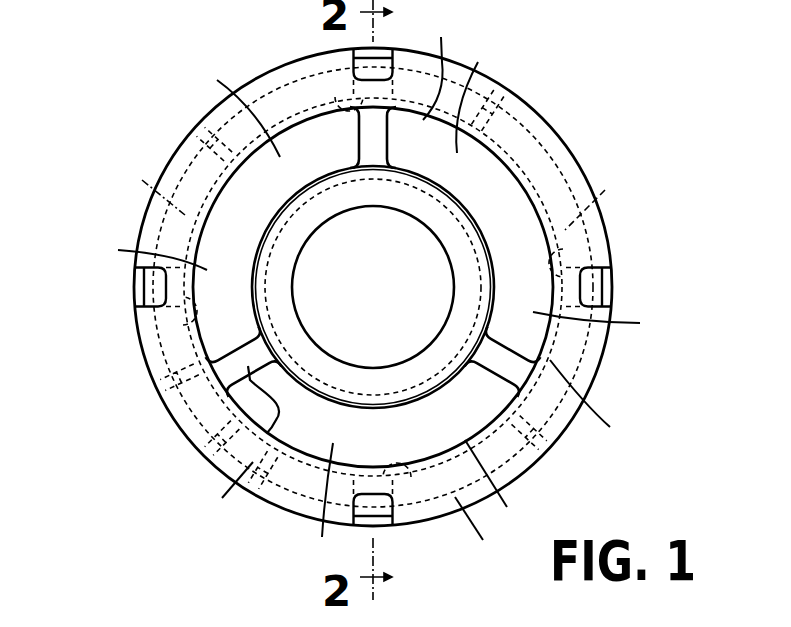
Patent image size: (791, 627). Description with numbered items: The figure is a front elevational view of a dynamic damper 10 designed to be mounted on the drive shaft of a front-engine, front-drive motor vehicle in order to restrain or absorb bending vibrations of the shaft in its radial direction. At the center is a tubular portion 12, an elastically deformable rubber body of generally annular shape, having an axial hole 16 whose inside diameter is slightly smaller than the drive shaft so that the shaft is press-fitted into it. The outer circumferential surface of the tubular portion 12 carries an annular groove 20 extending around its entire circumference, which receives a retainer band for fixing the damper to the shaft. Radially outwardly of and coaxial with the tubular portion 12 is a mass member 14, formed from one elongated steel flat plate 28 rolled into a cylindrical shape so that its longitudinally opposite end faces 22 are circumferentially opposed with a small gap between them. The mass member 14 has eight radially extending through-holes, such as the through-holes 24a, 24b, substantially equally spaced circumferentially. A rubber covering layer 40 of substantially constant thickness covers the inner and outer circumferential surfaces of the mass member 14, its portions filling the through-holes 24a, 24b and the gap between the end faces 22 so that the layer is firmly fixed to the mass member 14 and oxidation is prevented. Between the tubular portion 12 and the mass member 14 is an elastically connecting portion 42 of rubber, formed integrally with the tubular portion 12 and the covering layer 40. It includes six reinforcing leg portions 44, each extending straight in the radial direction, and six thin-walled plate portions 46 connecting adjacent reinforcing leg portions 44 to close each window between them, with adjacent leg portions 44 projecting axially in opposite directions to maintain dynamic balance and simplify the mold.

The dynamic damper 10 is at (523, 62).
The tubular portion 12 is at (365, 200).
The mass member 14 is at (152, 216).
The axial hole 16 is at (372, 370).
The annular groove 20 is at (263, 293).
The end faces 22 is at (247, 493).
The through-hole 24a is at (520, 150).
The through-hole 24b is at (200, 132).
The flat plate 28 is at (508, 92).
The covering layer 40 is at (585, 385).
The elastically connecting portion 42 is at (543, 340).
The reinforcing leg portions 44 is at (380, 288).
The plate portions 46 is at (379, 299).